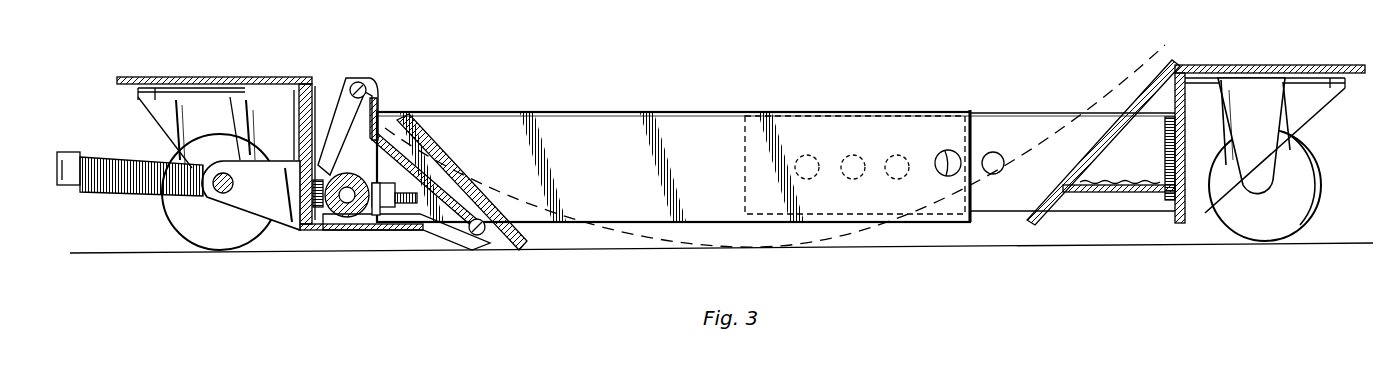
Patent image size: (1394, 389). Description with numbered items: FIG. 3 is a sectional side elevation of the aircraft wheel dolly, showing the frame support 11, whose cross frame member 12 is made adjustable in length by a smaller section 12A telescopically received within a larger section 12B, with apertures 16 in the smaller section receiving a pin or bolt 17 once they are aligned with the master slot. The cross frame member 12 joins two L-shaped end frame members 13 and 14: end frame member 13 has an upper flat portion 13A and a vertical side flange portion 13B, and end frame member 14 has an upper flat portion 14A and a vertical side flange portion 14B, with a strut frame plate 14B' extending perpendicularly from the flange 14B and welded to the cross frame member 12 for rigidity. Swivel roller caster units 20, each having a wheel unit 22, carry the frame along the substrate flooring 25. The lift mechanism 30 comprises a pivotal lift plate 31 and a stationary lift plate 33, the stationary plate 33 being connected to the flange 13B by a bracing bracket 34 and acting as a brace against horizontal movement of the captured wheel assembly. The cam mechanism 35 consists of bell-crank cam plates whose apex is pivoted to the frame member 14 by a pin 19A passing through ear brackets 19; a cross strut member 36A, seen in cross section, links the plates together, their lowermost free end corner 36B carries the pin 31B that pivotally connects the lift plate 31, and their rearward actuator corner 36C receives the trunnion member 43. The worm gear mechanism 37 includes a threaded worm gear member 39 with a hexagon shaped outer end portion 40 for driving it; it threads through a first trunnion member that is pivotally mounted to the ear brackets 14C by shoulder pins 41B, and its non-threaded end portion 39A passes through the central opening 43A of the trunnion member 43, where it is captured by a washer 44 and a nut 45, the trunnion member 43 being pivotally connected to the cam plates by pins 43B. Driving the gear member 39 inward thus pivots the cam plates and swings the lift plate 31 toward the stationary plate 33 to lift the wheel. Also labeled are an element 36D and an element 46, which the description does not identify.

The frame support 11 is at (1013, 80).
The cross frame member 12 is at (606, 113).
The smaller circumferential section 12A is at (1056, 126).
The larger circumferential section 12B is at (936, 113).
The end frame support member 13 is at (1246, 150).
The upper horizontally flat-like portion 13A is at (1261, 65).
The side flange portion 13B is at (1180, 222).
The end frame support member 14 is at (256, 154).
The upper horizontally flat-like portion 14A is at (210, 77).
The side flange portion 14B is at (361, 259).
The strut frame plate 14B' is at (376, 268).
The ear brackets 14C is at (251, 195).
The apertures or slots 16 is at (897, 155).
The pin or bolt 17 is at (941, 172).
The ear brackets 19 is at (338, 100).
The insertable pin 19A is at (375, 98).
The roller caster units 20 is at (1316, 230).
The wheel unit 22 is at (256, 248).
The substrate flooring 25 is at (626, 243).
The lift mechanism 30 is at (472, 126).
The lift plate 31 is at (480, 178).
The transversely extending pin 31B is at (516, 249).
The lift plate 33 is at (1062, 128).
The bracing bracket 34 is at (1112, 193).
The cam mechanism 35 is at (458, 252).
The cross strut member 36A is at (360, 82).
The lowermost free end corner area 36B is at (483, 237).
The actuator corner area 36C is at (333, 160).
The latch bar 36D is at (380, 108).
The threaded worm gear mechanism 37 is at (122, 198).
The worm gear member 39 is at (130, 168).
The non-threaded end portion 39A is at (424, 214).
The hexagon shaped outer end portion 40 is at (68, 186).
The pin or shoulder elements 41B is at (222, 195).
The trunnion member 43 is at (347, 173).
The central opening 43A is at (385, 229).
The pins 43B is at (345, 200).
The washer device 44 is at (373, 183).
The nut device 45 is at (386, 192).
The bracket side wall 46 is at (300, 80).